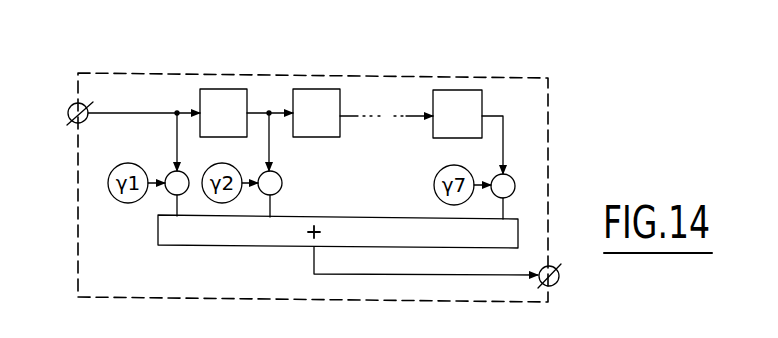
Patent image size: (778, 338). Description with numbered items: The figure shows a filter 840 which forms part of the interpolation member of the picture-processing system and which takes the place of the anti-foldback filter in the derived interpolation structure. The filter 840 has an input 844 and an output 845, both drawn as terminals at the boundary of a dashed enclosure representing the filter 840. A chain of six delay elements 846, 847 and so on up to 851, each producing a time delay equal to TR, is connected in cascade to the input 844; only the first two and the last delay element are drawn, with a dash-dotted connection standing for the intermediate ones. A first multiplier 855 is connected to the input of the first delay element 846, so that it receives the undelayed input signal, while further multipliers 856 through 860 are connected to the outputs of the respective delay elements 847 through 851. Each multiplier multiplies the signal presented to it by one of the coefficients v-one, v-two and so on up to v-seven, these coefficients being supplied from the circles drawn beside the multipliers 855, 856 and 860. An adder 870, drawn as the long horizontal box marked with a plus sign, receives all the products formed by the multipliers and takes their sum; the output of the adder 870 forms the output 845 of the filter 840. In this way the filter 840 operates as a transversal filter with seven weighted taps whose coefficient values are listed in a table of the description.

The filter 840 is at (515, 78).
The input 844 is at (70, 106).
The output 845 is at (557, 285).
The delay element 846 is at (223, 89).
The delay element 847 is at (317, 89).
The delay element 851 is at (447, 90).
The multiplier 855 is at (168, 175).
The multiplier 856 is at (281, 177).
The multiplier 860 is at (515, 184).
The adder 870 is at (238, 238).